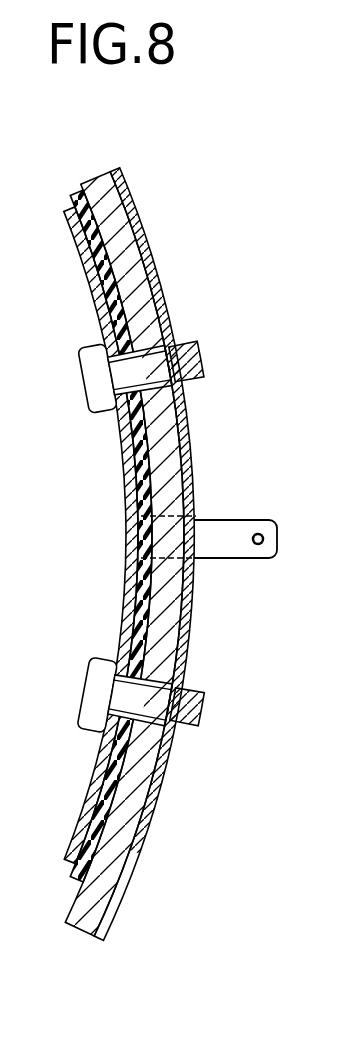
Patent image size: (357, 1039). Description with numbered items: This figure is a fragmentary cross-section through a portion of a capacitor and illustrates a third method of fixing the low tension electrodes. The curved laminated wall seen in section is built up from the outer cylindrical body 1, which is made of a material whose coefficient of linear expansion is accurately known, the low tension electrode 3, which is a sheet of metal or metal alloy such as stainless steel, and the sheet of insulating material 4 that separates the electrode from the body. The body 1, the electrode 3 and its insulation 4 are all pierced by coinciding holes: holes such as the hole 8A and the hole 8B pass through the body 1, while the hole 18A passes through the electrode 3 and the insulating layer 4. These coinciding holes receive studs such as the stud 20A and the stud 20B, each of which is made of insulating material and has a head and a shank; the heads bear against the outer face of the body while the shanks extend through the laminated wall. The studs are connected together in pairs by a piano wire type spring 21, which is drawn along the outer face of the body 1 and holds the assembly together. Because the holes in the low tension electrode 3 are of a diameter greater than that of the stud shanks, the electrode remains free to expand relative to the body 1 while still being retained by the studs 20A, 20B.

The outer cylindrical body 1 is at (172, 492).
The piano wire type spring 21 is at (187, 452).
The low tension electrode 3 is at (127, 440).
The sheet of insulating material 4 is at (130, 477).
The hole 18A is at (103, 340).
The hole 8A is at (155, 325).
The stud 20A is at (193, 358).
The hole 8B is at (150, 672).
The stud 20B is at (200, 718).